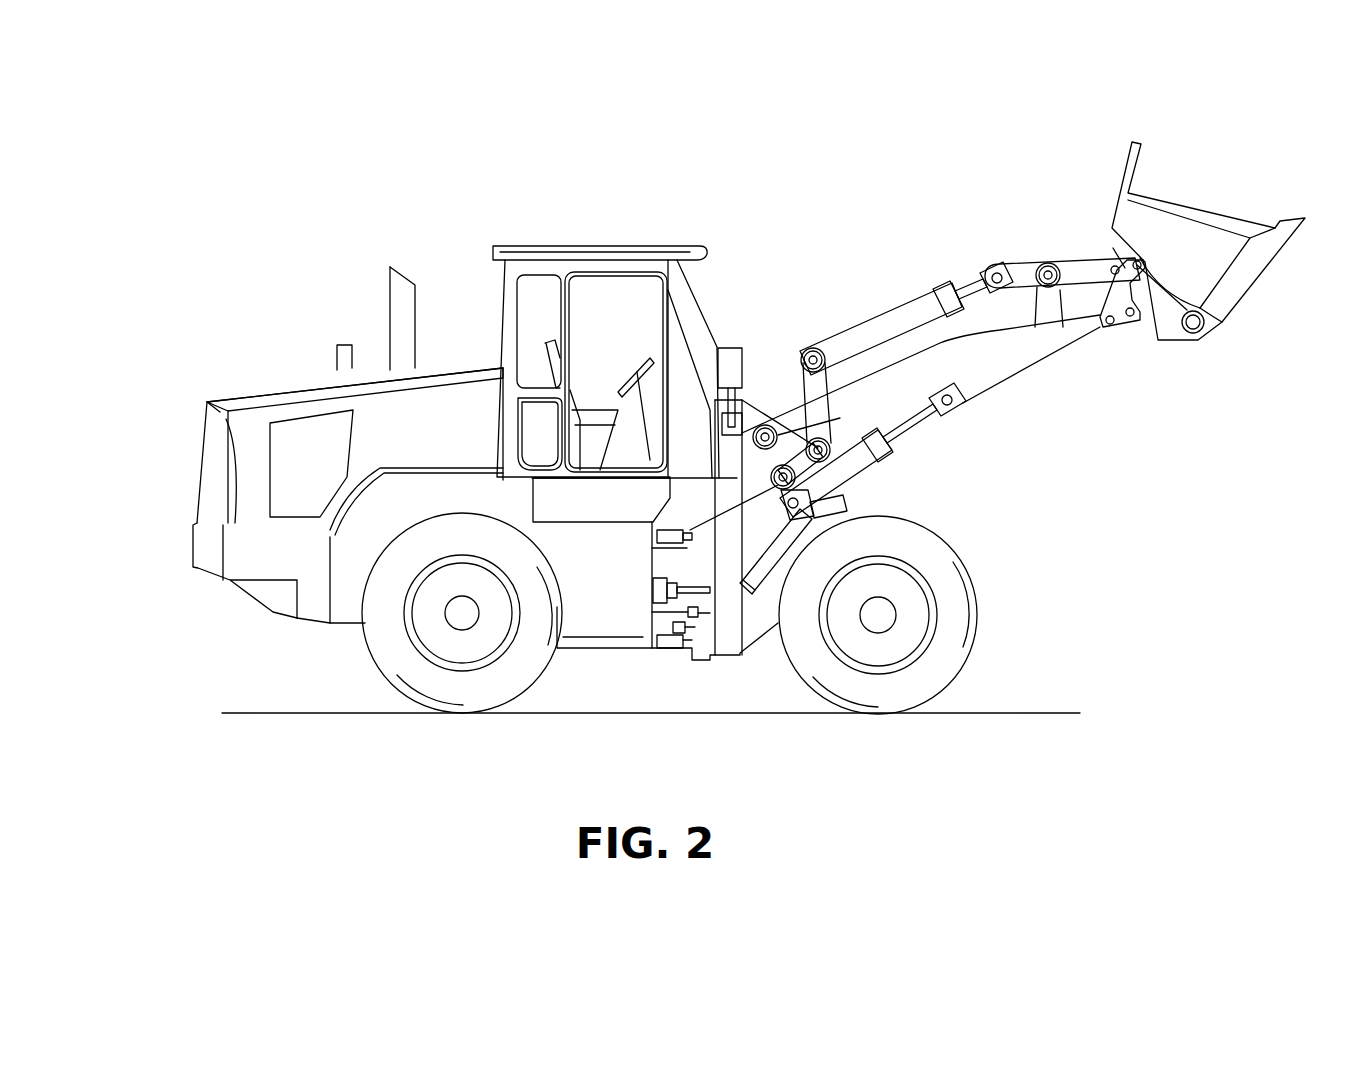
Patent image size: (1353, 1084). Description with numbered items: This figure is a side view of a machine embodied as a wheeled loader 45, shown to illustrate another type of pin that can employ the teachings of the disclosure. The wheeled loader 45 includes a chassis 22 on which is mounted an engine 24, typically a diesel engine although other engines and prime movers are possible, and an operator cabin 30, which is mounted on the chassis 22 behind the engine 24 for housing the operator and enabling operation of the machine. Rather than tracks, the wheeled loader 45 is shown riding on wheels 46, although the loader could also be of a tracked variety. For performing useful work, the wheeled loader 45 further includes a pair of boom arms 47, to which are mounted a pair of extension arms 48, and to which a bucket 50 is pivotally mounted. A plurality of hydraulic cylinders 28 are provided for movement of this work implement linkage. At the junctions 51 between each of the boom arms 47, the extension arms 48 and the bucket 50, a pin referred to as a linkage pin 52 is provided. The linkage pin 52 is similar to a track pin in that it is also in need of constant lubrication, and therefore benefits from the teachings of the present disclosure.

The chassis 22 is at (313, 617).
The engine 24 is at (252, 490).
The hydraulic cylinders 28 is at (925, 310).
The operator cabin 30 is at (650, 305).
The wheeled loader 45 is at (330, 300).
The wheels 46 is at (428, 673).
The boom arms 47 is at (1030, 378).
The extension arms 48 is at (1078, 272).
The bucket 50 is at (1198, 198).
The junctions 51 is at (803, 335).
The linkage pin 52 is at (832, 375).